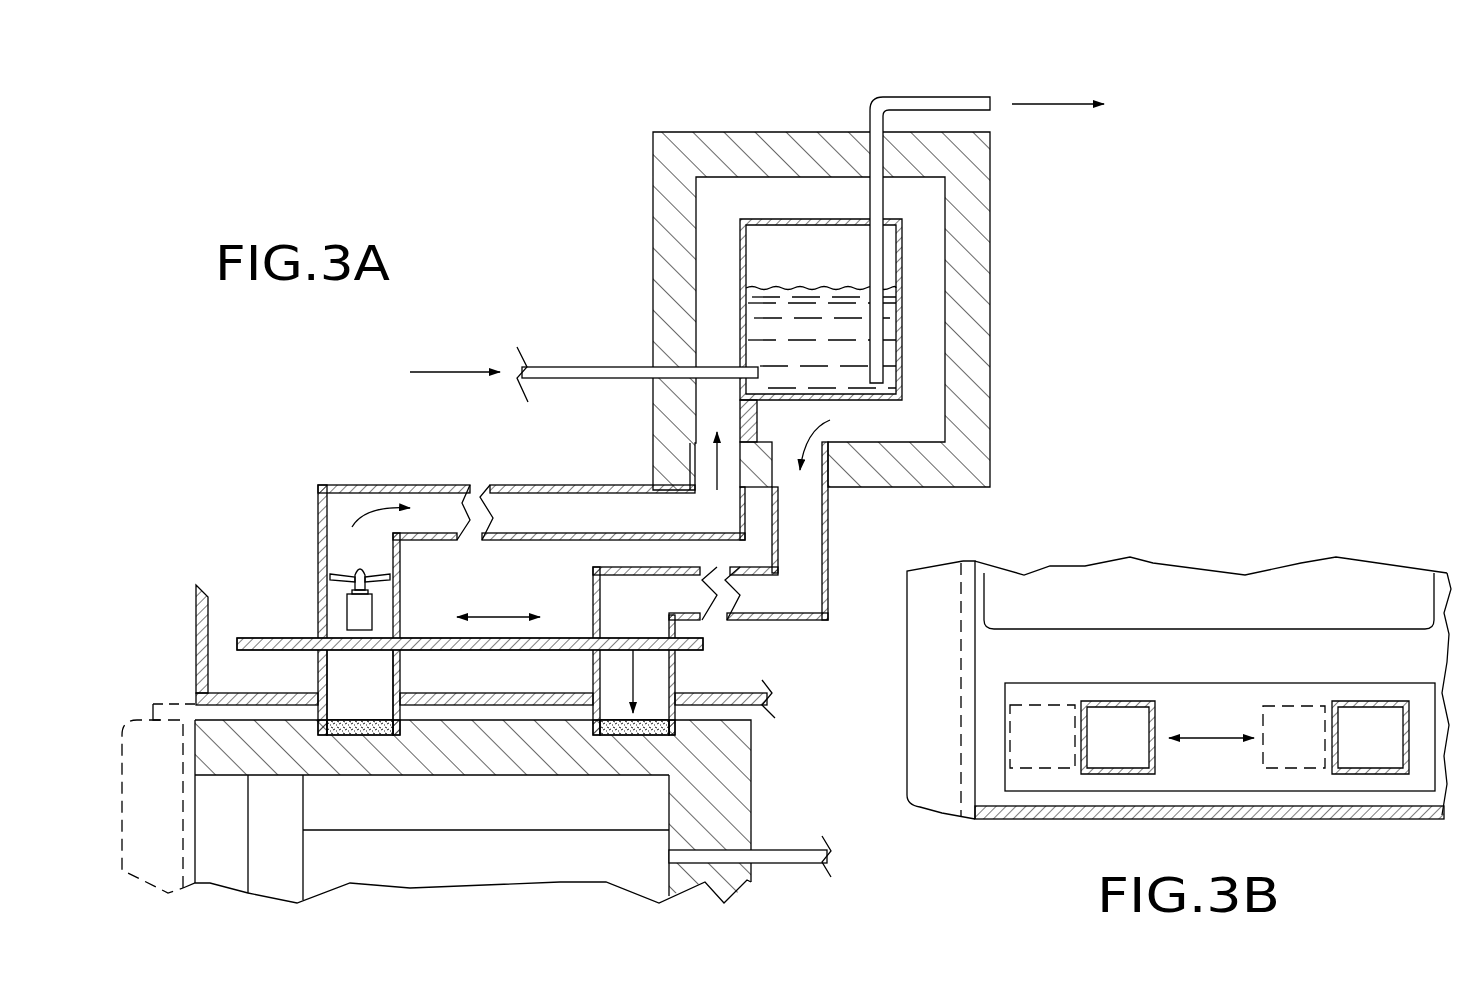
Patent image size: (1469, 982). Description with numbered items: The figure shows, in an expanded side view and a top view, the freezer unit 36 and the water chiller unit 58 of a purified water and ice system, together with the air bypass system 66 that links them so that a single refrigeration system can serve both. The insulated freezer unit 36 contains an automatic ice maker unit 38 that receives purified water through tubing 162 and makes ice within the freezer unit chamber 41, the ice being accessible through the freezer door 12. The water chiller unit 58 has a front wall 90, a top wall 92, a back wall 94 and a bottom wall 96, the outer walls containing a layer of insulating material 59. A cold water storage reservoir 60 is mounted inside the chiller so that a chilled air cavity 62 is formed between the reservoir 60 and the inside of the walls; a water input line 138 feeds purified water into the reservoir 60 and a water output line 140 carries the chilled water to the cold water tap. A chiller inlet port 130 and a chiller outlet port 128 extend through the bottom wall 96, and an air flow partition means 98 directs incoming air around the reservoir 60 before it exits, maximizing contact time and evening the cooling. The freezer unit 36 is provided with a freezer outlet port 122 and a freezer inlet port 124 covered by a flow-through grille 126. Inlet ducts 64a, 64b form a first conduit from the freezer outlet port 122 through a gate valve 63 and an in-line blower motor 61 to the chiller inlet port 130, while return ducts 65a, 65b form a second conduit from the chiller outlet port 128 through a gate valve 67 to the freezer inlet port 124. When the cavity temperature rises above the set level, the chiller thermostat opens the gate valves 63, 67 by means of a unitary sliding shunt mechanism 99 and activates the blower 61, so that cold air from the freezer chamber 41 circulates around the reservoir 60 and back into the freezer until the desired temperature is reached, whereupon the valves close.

In FIG. 3A, the freezer door 12 is at (197, 584).
In FIG. 3B, the freezer door 12 is at (937, 780).
In FIG. 3A, the freezer unit 36 is at (765, 757).
In FIG. 3A, the automatic ice maker unit 38 is at (468, 873).
In FIG. 3B, the automatic ice maker unit 38 is at (1278, 597).
In FIG. 3A, the freezer unit chamber 41 is at (235, 828).
In FIG. 3A, the water chiller unit 58 is at (1014, 413).
In FIG. 3A, the insulating material 59 is at (965, 240).
In FIG. 3A, the cold water storage reservoir 60 is at (803, 256).
In FIG. 3A, the in-line blower motor 61 is at (357, 600).
In FIG. 3A, the chilled air cavity 62 is at (915, 308).
In FIG. 3A, the gate valve 63 is at (350, 645).
In FIG. 3B, the gate valve 63 is at (1113, 747).
In FIG. 3A, the inlet duct 64a is at (440, 505).
In FIG. 3A, the inlet duct 64b is at (360, 672).
In FIG. 3A, the return duct 65a is at (806, 569).
In FIG. 3A, the return duct 65b is at (647, 672).
In FIG. 3A, the air bypass system 66 is at (323, 463).
In FIG. 3A, the gate valve 67 is at (620, 647).
In FIG. 3B, the gate valve 67 is at (1373, 746).
In FIG. 3A, the front wall 90 is at (652, 205).
In FIG. 3A, the top wall 92 is at (705, 133).
In FIG. 3A, the back wall 94 is at (993, 358).
In FIG. 3A, the bottom wall 96 is at (955, 488).
In FIG. 3A, the air flow partition means 98 is at (740, 402).
In FIG. 3A, the unitary sliding shunt mechanism 99 is at (420, 640).
In FIG. 3B, the unitary sliding shunt mechanism 99 is at (1208, 697).
In FIG. 3A, the freezer outlet port 122 is at (337, 720).
In FIG. 3A, the freezer inlet port 124 is at (620, 720).
In FIG. 3A, the flow-through grille 126 is at (357, 735).
In FIG. 3A, the chiller outlet port 128 is at (810, 468).
In FIG. 3A, the chiller inlet port 130 is at (650, 456).
In FIG. 3A, the water input line 138 is at (450, 367).
In FIG. 3A, the water output line 140 is at (1055, 106).
In FIG. 3A, the tubing 162 is at (785, 850).